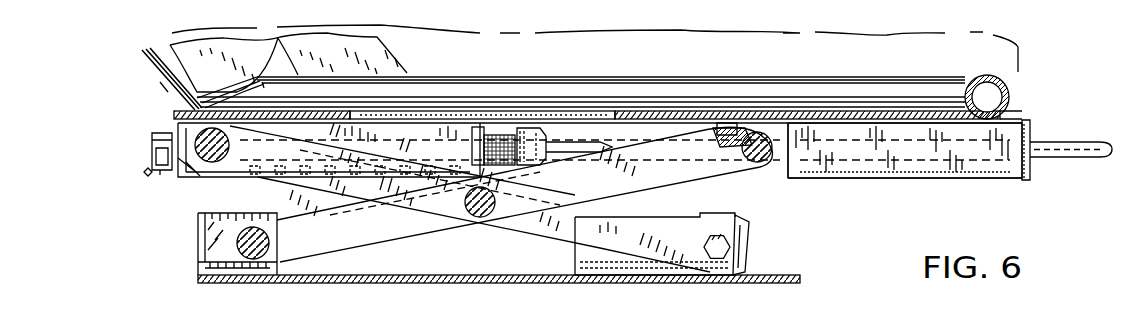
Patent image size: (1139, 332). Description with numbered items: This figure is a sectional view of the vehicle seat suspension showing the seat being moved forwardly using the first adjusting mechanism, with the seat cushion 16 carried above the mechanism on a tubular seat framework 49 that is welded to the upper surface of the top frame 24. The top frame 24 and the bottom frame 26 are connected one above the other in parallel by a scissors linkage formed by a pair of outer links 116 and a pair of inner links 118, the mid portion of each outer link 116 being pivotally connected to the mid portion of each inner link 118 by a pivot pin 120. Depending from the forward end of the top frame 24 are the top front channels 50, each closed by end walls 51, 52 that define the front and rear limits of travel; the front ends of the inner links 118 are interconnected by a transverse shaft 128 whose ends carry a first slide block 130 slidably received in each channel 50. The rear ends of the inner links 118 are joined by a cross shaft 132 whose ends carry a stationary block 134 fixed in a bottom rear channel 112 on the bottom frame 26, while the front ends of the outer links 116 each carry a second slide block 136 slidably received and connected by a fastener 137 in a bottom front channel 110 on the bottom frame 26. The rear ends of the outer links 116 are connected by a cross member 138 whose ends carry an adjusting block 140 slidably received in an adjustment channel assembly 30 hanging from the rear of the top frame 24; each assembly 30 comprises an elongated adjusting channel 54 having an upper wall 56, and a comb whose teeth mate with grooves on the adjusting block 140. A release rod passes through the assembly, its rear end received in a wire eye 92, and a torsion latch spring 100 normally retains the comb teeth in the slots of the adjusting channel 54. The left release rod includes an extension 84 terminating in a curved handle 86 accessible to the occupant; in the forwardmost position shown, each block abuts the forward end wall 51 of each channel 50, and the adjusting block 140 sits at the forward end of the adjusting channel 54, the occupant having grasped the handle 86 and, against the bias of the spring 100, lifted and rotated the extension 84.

The seat cushion 16 is at (690, 52).
The top frame 24 is at (171, 104).
The bottom frame 26 is at (799, 290).
The adjustment channel assembly 30 is at (238, 187).
The tubular seat framework 49 is at (1006, 90).
The top front channel 50 is at (919, 194).
The end wall 51 is at (1033, 125).
The end wall 52 is at (717, 110).
The adjusting channel 54 is at (200, 178).
The upper wall 56 is at (880, 112).
The extension 84 is at (573, 147).
The handle 86 is at (1100, 143).
The wire eye 92 is at (157, 147).
The torsion latch spring 100 is at (500, 133).
The bottom front channel 110 is at (727, 222).
The bottom rear channel 112 is at (213, 247).
The outer link 116 is at (647, 247).
The inner link 118 is at (437, 230).
The pivot pin 120 is at (493, 208).
The transverse shaft 128 is at (768, 130).
The first slide block 130 is at (782, 168).
The cross shaft 132 is at (253, 263).
The stationary block 134 is at (213, 262).
The second slide block 136 is at (700, 283).
The fastener 137 is at (721, 250).
The cross member 138 is at (187, 163).
The adjusting block 140 is at (192, 133).